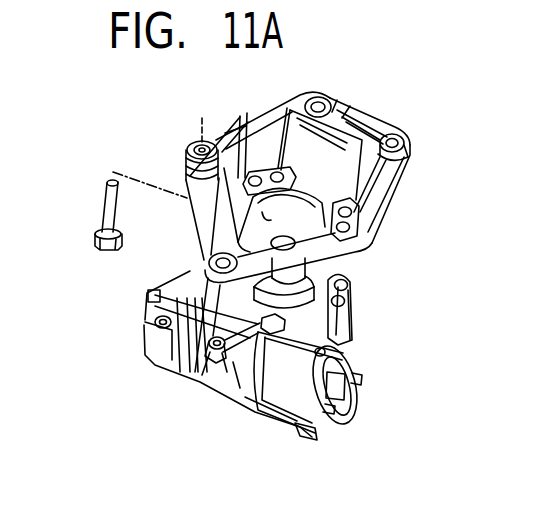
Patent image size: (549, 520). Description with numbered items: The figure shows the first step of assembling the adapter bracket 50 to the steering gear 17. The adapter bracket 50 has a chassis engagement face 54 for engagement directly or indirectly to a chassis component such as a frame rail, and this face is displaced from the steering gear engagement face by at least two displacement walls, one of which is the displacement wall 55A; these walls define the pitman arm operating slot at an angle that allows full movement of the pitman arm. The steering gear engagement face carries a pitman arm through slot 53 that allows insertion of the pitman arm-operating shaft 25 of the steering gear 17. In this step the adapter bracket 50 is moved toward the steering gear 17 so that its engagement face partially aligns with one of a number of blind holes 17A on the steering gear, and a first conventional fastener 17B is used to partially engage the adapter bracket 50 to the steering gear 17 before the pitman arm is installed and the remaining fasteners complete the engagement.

The steering gear 17 is at (258, 421).
The blind holes 17A is at (353, 285).
The first conventional fastener 17B is at (98, 214).
The pitman arm-operating shaft 25 is at (337, 270).
The adapter bracket 50 is at (373, 114).
The pitman arm through slot 53 is at (224, 128).
The chassis engagement face 54 is at (228, 132).
The displacement wall 55A is at (340, 168).